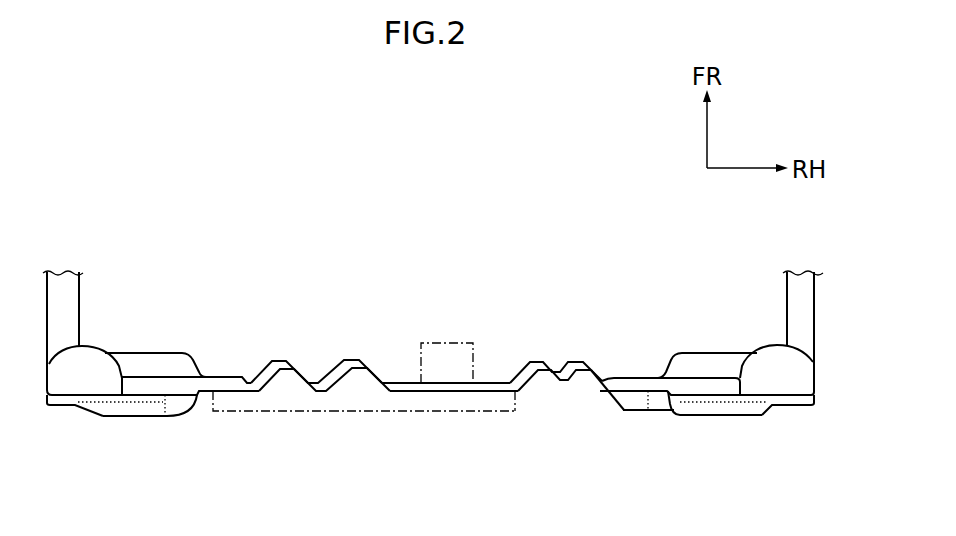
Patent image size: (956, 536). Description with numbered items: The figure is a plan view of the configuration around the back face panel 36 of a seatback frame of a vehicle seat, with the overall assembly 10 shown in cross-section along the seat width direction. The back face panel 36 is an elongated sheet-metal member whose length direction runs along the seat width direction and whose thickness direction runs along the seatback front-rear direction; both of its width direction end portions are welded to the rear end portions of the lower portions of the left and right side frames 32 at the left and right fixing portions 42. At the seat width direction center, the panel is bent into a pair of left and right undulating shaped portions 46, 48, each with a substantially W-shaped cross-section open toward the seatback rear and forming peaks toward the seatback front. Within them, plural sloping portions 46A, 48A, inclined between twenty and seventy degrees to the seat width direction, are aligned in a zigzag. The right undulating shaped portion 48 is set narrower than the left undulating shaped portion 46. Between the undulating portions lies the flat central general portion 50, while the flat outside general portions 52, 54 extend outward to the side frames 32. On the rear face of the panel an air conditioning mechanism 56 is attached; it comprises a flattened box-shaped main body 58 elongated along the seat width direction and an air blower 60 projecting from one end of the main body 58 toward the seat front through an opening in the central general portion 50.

The floor panel 10 is at (446, 226).
The side frame 32 is at (80, 306).
The back face panel 36 is at (624, 413).
The fixing portion 42 is at (90, 407).
The undulating shaped portion 46 is at (310, 393).
The sloping portion 46A is at (260, 370).
The undulating shaped portion 48 is at (556, 376).
The sloping portion 48A is at (510, 370).
The central general portion 50 is at (407, 395).
The outside general portion 52 is at (167, 418).
The outside general portion 54 is at (650, 415).
The air conditioning mechanism 56 is at (268, 412).
The main body 58 is at (377, 412).
The air blower 60 is at (458, 342).